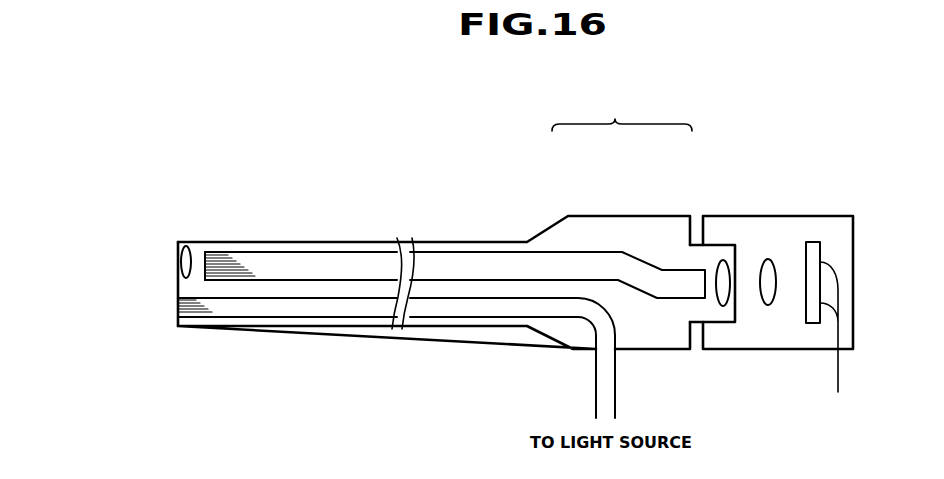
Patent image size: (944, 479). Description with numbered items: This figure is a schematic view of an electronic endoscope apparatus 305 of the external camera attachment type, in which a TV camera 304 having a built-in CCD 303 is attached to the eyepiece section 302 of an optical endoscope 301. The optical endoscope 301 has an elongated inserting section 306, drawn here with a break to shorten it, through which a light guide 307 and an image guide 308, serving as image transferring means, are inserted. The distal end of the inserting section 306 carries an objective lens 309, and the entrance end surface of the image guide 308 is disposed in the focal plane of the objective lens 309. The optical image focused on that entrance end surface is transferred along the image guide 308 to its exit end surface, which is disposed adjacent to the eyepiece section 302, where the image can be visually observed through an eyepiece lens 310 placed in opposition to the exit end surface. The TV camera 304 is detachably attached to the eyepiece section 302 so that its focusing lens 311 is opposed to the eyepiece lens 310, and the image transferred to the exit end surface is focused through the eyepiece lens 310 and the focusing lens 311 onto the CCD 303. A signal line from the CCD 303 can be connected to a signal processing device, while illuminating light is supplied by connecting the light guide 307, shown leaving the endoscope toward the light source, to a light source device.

The optical endoscope 301 is at (548, 203).
The eyepiece section 302 is at (718, 323).
The CCD 303 is at (805, 322).
The TV camera 304 is at (712, 207).
The electronic endoscope apparatus 305 is at (622, 113).
The inserting section 306 is at (307, 242).
The light guide 307 is at (297, 310).
The image guide 308 is at (394, 252).
The objective lens 309 is at (186, 248).
The eyepiece lens 310 is at (728, 259).
The focusing lens 311 is at (776, 259).